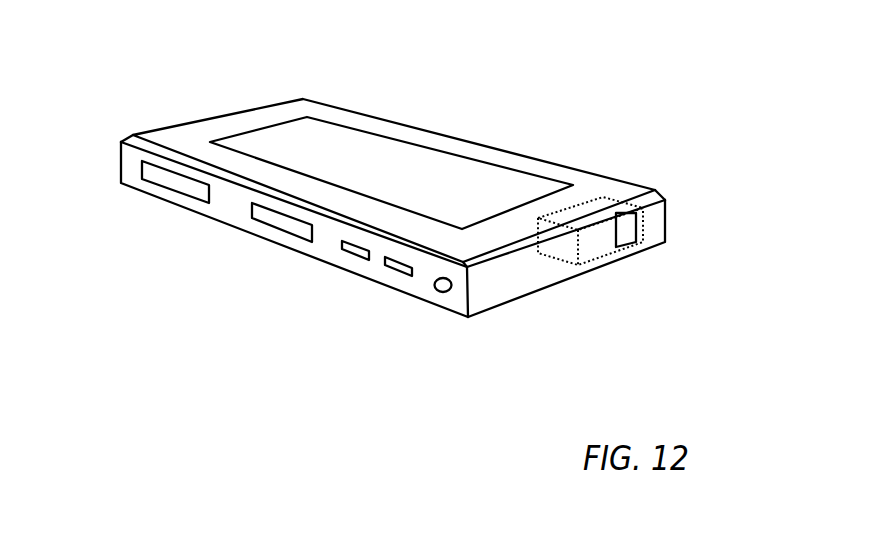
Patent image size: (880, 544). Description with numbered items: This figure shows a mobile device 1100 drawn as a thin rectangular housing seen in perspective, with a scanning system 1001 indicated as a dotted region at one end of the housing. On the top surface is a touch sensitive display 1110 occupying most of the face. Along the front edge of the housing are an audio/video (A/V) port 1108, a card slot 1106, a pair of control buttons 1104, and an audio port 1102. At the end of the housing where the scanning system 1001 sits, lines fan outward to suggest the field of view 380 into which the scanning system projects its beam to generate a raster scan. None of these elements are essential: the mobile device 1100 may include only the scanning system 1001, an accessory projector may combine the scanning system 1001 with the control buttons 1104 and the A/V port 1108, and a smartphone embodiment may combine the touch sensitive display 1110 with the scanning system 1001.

The mobile device 1100 is at (690, 53).
The touch sensitive display 1110 is at (407, 158).
The audio/video (A/V) port 1108 is at (160, 180).
The card slot 1106 is at (273, 222).
The control buttons 1104 is at (388, 270).
The audio port 1102 is at (441, 293).
The scanning system 1001 is at (605, 202).
The field of view 380 is at (622, 225).